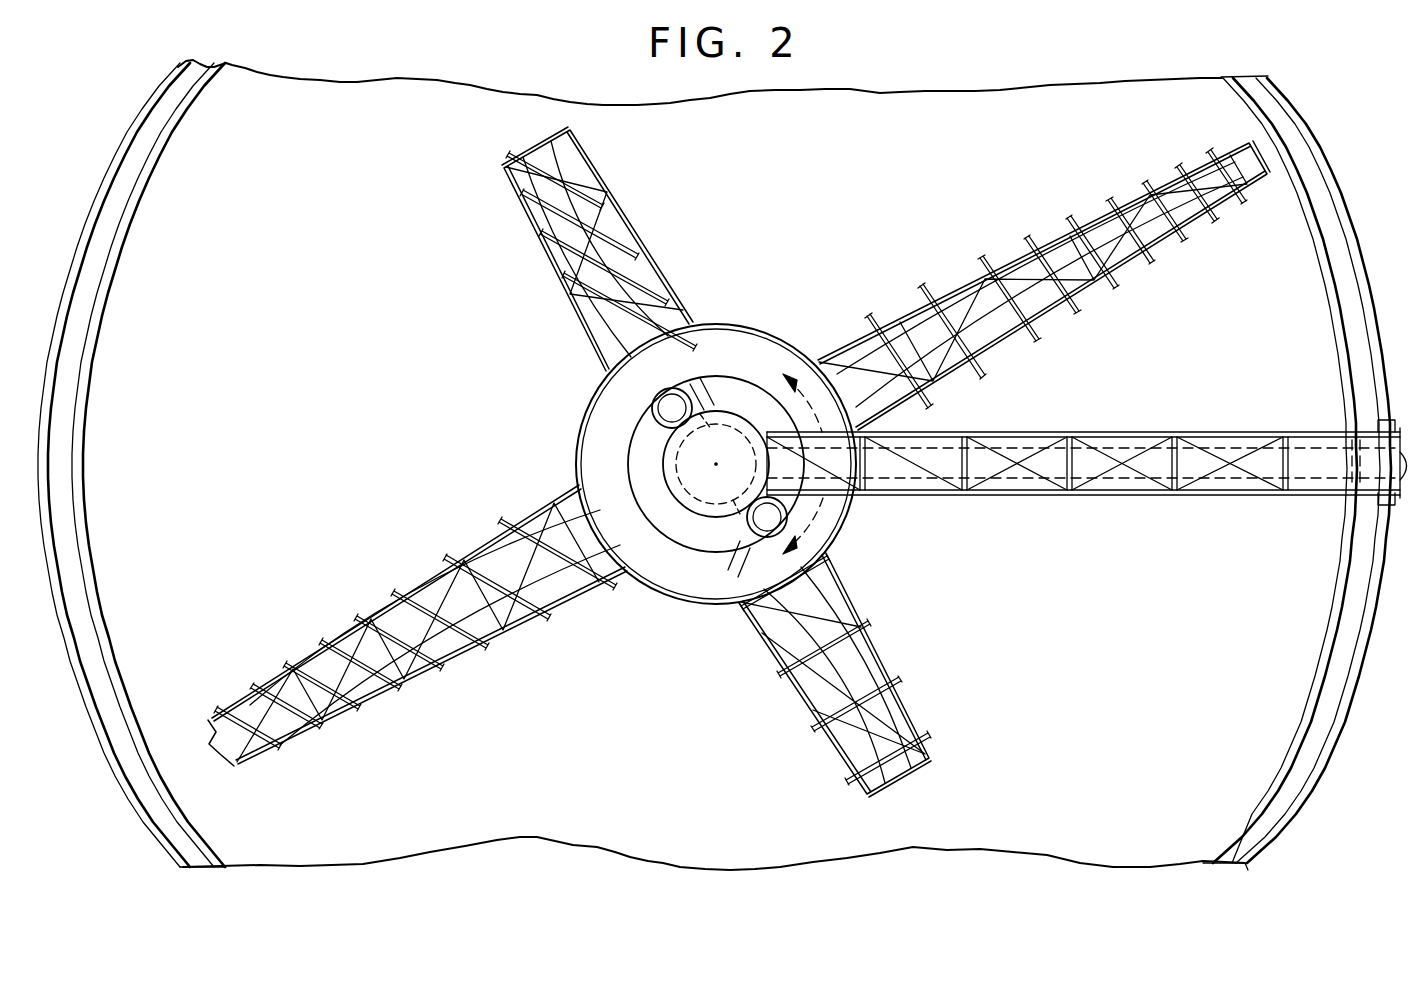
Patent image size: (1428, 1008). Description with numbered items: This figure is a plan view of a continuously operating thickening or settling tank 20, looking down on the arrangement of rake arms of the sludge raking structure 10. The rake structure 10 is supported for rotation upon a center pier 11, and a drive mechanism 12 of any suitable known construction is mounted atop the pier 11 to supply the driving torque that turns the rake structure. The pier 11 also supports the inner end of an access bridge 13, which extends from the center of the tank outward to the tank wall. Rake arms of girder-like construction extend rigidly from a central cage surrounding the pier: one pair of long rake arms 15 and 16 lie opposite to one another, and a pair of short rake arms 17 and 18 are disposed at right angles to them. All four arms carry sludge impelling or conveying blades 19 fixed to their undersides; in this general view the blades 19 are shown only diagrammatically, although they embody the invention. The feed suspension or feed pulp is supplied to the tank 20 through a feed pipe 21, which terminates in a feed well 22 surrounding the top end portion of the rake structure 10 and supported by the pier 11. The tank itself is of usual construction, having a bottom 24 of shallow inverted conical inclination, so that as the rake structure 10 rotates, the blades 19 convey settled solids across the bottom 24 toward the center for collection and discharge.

The sludge raking structure 10 is at (868, 306).
The center pier 11 is at (724, 428).
The drive mechanism 12 is at (655, 405).
The access bridge 13 is at (1060, 490).
The long rake arm 15 is at (1013, 255).
The long rake arm 16 is at (377, 612).
The short rake arm 17 is at (633, 217).
The short rake arm 18 is at (887, 672).
The sludge impelling or conveying blades 19 is at (618, 183).
The settling tank 20 is at (990, 88).
The feed pipe 21 is at (1320, 478).
The feed well 22 is at (847, 533).
The bottom 24 is at (408, 352).